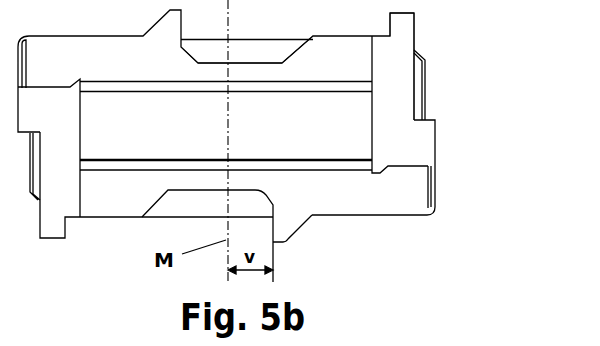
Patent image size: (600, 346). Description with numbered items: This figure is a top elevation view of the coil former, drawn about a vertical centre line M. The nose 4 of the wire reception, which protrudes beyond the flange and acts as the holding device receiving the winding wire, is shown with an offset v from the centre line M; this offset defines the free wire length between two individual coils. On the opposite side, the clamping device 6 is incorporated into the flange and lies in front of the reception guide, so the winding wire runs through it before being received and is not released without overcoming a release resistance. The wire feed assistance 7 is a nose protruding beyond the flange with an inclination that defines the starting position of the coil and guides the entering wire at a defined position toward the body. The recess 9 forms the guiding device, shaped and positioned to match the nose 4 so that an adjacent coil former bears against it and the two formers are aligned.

The recess 9 is at (257, 54).
The wire feed assistance 7 is at (402, 27).
The clamping device 6 is at (424, 142).
The nose of the wire reception 4 is at (285, 231).